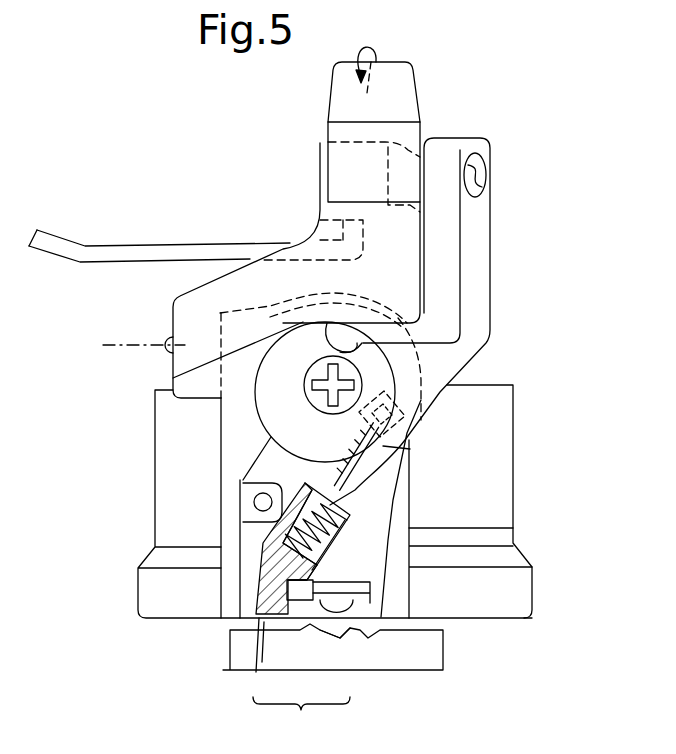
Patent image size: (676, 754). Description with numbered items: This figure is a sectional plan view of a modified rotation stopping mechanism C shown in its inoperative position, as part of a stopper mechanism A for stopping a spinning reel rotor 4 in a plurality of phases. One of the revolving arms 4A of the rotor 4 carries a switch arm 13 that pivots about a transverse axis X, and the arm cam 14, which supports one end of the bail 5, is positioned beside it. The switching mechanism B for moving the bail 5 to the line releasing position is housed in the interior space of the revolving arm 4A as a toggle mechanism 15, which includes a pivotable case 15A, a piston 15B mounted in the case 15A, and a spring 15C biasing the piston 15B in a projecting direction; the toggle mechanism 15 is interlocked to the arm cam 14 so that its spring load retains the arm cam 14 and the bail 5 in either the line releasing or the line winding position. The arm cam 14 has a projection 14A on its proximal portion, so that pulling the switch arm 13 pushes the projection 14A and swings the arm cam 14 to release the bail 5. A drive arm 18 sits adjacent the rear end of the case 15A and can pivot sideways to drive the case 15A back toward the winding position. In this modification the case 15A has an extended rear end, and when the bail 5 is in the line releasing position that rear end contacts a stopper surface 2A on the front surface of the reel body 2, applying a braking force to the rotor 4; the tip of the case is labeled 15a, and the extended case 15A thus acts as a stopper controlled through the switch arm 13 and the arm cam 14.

The switch arm 13 is at (335, 100).
The bail 5 is at (83, 245).
The transverse axis X is at (133, 348).
The arm cam 14 is at (482, 237).
The stopper mechanism A is at (530, 319).
The projection 14A is at (357, 345).
The rotor 4 is at (522, 414).
The revolving arm 4A is at (513, 530).
The spring 15C is at (410, 450).
The switching mechanism B is at (380, 478).
The piston 15B is at (350, 483).
The toggle mechanism 15 is at (350, 556).
The case 15A is at (262, 563).
The projection 15a is at (282, 661).
The drive arm 18 is at (370, 603).
The reel body 2 is at (443, 655).
The stopper surface 2A is at (331, 666).
The rotation stopping mechanism C is at (301, 722).